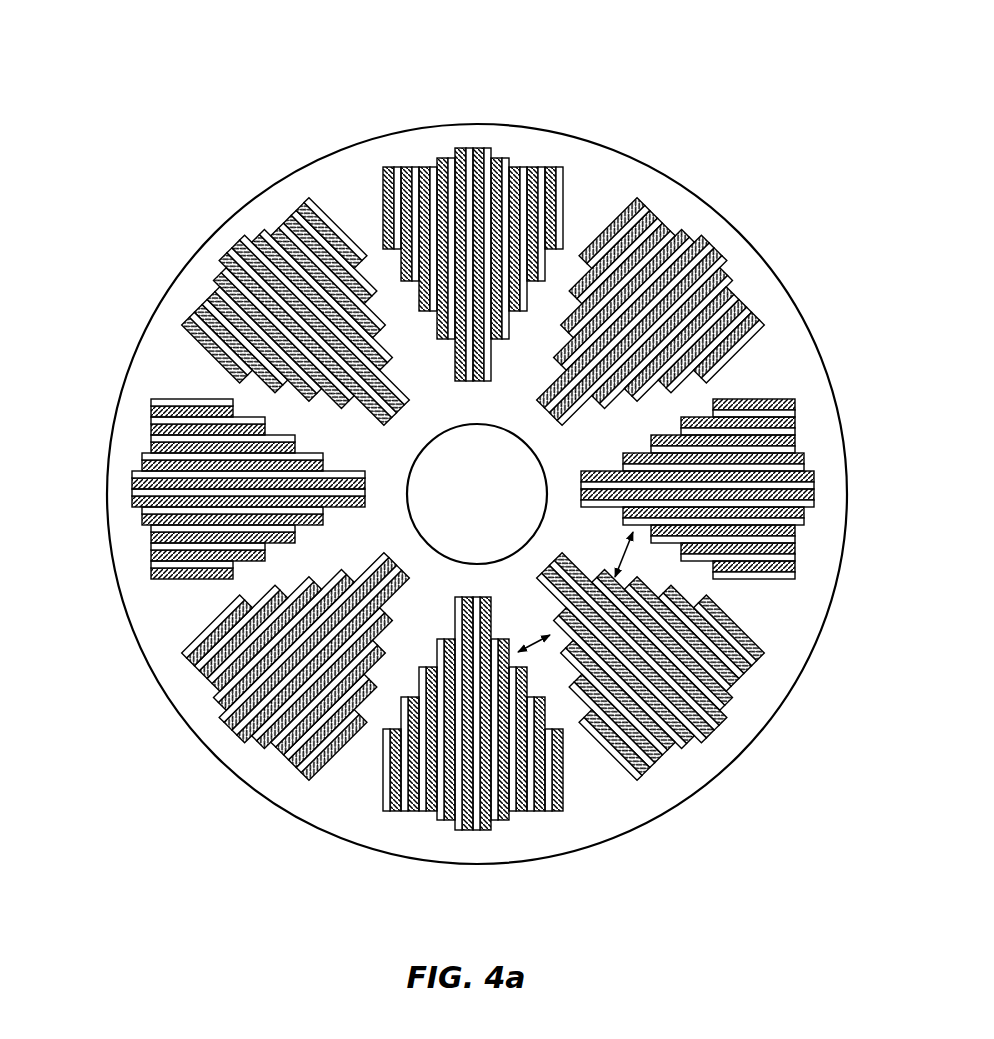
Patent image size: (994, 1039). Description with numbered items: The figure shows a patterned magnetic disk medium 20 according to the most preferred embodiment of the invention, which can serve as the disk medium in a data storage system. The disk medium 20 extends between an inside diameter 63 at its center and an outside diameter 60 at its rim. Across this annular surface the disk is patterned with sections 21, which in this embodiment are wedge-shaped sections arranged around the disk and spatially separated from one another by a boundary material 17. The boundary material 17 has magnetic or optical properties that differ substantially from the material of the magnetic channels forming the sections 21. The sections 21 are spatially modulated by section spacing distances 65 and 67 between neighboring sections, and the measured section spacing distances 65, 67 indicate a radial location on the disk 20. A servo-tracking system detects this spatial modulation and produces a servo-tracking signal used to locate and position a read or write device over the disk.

The patterned magnetic disk medium 20 is at (125, 103).
The boundary material 17 is at (342, 170).
The patterned sections 21 is at (235, 250).
The outside diameter 60 is at (252, 790).
The inside diameter 63 is at (528, 448).
The section spacing distance 65 is at (534, 648).
The section spacing distance 67 is at (626, 556).